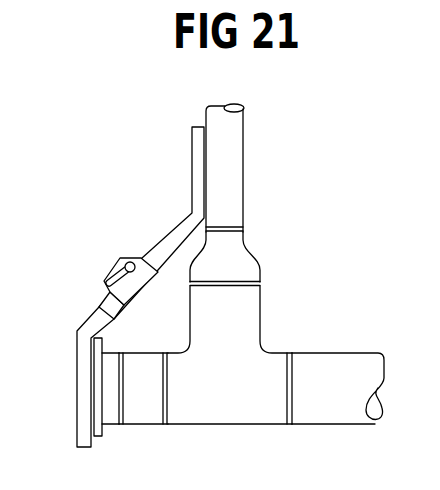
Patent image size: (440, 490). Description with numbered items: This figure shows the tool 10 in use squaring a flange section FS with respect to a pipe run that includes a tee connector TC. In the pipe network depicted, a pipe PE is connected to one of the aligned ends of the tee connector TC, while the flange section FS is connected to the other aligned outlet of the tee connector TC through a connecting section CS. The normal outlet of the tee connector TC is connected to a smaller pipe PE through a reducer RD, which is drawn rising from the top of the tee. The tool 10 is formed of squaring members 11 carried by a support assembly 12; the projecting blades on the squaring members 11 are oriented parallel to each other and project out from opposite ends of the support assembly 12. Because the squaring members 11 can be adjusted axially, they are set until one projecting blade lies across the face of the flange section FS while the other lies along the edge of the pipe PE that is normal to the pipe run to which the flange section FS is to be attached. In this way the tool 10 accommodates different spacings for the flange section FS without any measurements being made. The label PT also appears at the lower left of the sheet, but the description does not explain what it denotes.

The tool 10 is at (116, 287).
The squaring members 11 is at (186, 208).
The support assembly 12 is at (98, 295).
The pipe PE is at (233, 168).
The reducer RD is at (247, 256).
The tee connector TC is at (244, 428).
The connecting section CS is at (152, 415).
The flange section FS is at (103, 432).
The pipe PT is at (14, 469).